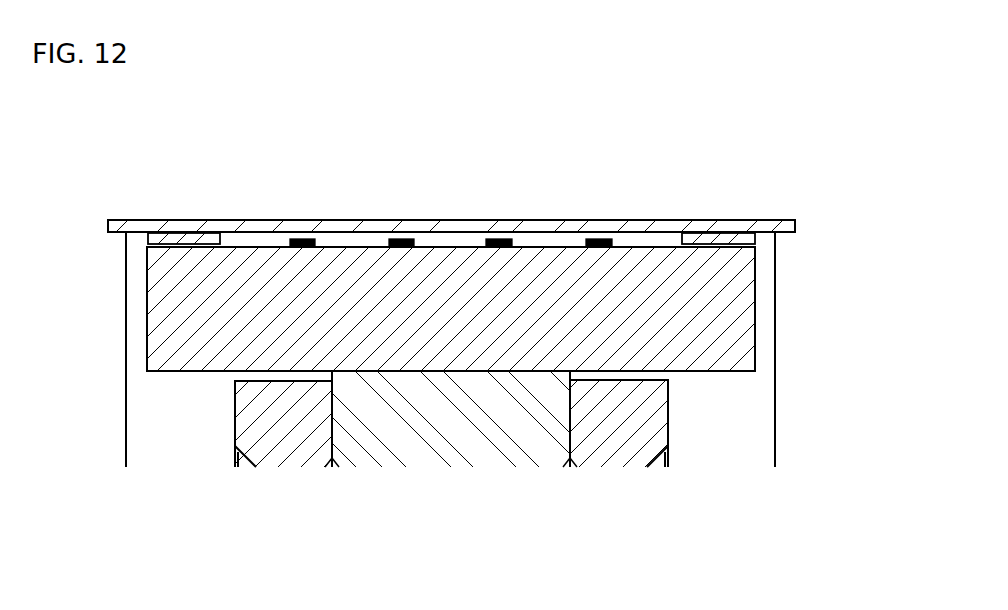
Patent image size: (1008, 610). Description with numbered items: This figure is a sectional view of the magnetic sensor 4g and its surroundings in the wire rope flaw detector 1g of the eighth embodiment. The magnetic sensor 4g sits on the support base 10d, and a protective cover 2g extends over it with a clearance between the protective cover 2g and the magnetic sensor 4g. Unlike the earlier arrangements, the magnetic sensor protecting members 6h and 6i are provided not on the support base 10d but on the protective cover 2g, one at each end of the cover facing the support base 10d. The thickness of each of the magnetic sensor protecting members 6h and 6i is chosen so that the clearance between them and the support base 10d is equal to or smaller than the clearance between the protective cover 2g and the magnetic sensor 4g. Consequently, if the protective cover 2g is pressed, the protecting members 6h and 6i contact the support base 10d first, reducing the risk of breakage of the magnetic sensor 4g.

The wire rope flaw detector 1g is at (627, 215).
The protective cover 2g is at (483, 225).
The magnetic sensor 4g is at (402, 245).
The magnetic sensor protecting member 6h is at (187, 239).
The magnetic sensor protecting member 6i is at (712, 238).
The support base 10d is at (248, 265).